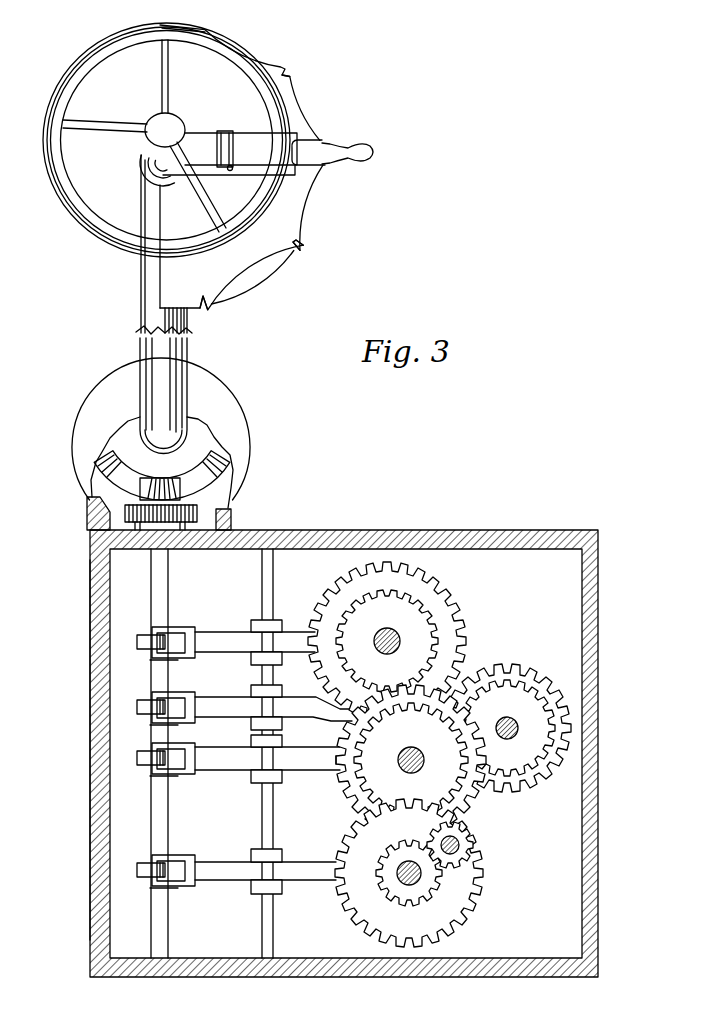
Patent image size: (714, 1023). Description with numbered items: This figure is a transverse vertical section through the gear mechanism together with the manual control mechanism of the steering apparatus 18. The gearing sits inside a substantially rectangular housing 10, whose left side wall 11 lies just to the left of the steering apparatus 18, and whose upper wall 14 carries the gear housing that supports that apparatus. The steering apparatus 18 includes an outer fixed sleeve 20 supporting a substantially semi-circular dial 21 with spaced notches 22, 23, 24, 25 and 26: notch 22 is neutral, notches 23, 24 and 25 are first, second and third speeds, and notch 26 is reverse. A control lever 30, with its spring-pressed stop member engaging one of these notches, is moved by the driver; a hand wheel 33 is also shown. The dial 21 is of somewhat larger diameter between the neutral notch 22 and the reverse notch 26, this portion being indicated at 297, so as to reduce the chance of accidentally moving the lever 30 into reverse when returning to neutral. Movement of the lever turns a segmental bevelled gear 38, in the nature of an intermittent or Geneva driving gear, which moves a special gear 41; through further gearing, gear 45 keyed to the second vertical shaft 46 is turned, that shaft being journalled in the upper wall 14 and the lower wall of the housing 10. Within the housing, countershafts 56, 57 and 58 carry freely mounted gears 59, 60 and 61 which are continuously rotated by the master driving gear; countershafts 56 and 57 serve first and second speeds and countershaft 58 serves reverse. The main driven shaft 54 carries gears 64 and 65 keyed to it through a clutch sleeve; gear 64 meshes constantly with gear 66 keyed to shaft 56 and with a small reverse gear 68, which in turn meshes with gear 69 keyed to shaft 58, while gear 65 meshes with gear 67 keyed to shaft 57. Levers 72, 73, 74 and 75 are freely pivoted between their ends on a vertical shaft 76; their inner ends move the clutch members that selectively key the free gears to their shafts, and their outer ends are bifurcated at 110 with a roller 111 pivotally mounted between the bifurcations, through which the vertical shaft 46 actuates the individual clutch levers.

The housing 10 is at (345, 743).
The box wall 11 is at (95, 680).
The upper wall 14 is at (350, 530).
The steering apparatus 18 is at (199, 384).
The outer fixed sleeve 20 is at (140, 376).
The dial 21 is at (284, 290).
The notch 22 is at (305, 248).
The notch 23 is at (325, 142).
The notch 24 is at (291, 80).
The notch 25 is at (205, 30).
The notch 26 is at (205, 308).
The enlarged dial portion 297 is at (257, 293).
The control lever 30 is at (376, 147).
The hand wheel 33 is at (68, 215).
The segmental bevelled gear 38 is at (205, 455).
The special gear 41 is at (140, 490).
The gear 45 is at (200, 518).
The second vertical shaft 46 is at (170, 591).
The main driven shaft 54 is at (422, 754).
The countershaft 56 is at (389, 632).
The countershaft 57 is at (509, 719).
The countershaft 58 is at (418, 884).
The gear 59 is at (440, 613).
The gear 60 is at (525, 672).
The gear 61 is at (485, 893).
The gear 64 is at (342, 784).
The gear 65 is at (396, 746).
The gear 66 is at (400, 675).
The gear 67 is at (522, 756).
The small gear 68 is at (462, 846).
The gear 69 is at (394, 862).
The lever 72 is at (255, 642).
The lever 73 is at (273, 707).
The lever 74 is at (267, 759).
The lever 75 is at (265, 871).
The vertical shaft 76 is at (275, 592).
The bifurcated portion 110 is at (178, 630).
The roller 111 is at (137, 647).